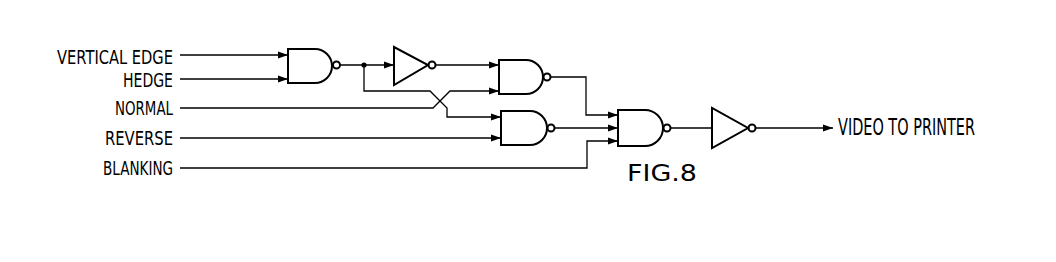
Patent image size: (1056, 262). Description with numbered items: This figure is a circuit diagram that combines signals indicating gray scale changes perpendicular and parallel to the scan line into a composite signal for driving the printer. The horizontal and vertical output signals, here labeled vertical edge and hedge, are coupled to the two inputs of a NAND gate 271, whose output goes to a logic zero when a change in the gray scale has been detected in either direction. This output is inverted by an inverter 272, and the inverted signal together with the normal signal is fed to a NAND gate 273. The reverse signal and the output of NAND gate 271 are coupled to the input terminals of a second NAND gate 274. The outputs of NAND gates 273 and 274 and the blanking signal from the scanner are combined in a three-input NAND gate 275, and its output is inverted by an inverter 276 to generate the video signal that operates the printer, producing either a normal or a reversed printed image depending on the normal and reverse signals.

The NAND gate 271 is at (312, 85).
The inverter 272 is at (421, 69).
The NAND gate 273 is at (531, 95).
The second NAND gate 274 is at (533, 146).
The three-input NAND gate 275 is at (637, 109).
The inverter 276 is at (733, 113).